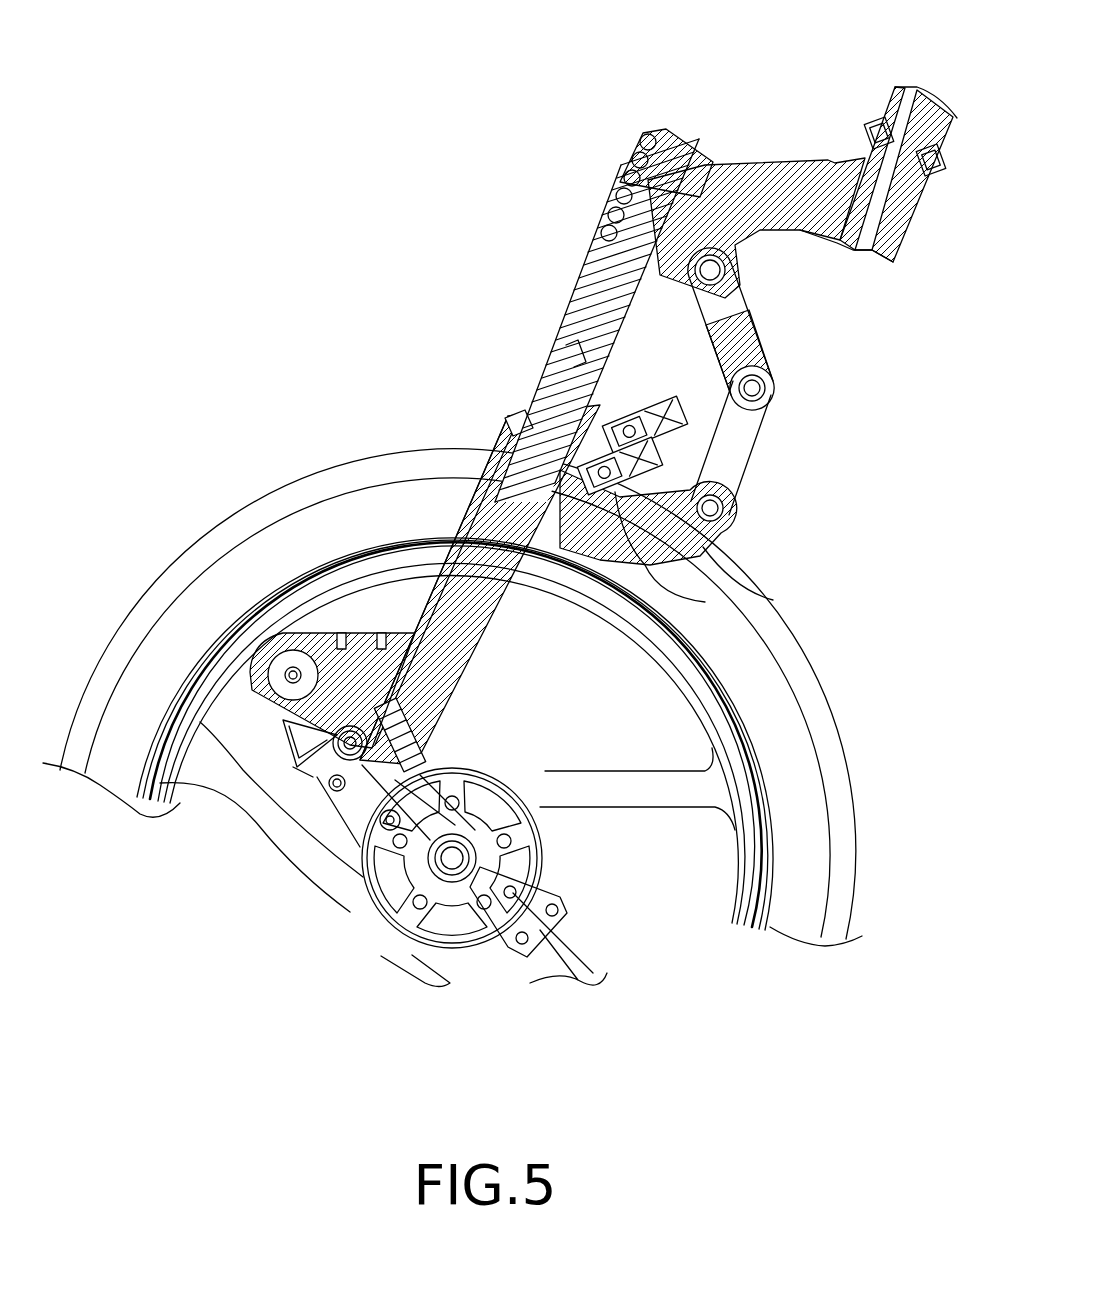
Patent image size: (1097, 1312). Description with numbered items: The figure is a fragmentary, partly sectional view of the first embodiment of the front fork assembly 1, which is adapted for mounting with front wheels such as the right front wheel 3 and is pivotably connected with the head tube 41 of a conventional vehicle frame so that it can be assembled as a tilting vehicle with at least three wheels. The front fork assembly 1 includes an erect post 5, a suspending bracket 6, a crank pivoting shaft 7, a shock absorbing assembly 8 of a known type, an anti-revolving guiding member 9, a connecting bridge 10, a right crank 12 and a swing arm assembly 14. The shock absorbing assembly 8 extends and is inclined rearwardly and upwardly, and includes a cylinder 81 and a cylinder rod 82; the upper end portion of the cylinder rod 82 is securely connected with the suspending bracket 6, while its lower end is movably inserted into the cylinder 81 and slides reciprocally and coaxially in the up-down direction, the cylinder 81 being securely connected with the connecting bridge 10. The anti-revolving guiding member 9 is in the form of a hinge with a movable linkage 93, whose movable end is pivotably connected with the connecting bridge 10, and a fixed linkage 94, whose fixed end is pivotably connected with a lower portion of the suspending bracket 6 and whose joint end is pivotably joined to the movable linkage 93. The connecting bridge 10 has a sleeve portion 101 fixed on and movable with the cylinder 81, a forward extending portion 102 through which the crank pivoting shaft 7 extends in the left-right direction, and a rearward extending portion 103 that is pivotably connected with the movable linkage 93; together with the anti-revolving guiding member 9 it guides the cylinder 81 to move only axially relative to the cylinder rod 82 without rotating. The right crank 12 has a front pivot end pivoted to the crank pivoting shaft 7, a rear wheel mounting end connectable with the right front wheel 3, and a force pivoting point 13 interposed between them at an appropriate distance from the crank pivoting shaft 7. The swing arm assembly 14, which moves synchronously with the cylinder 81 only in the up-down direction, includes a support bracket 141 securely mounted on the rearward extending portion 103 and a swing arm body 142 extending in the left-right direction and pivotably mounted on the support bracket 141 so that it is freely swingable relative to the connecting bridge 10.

The front fork assembly 1 is at (545, 233).
The right front wheel 3 is at (213, 547).
The erect post 5 is at (917, 87).
The suspending bracket 6 is at (782, 163).
The crank pivoting shaft 7 is at (251, 607).
The shock absorbing assembly 8 is at (599, 315).
The anti-revolving guiding member 9 is at (781, 381).
The connecting bridge 10 is at (428, 628).
The right crank 12 is at (293, 752).
The force pivoting point 13 is at (332, 758).
The swing arm assembly 14 is at (715, 357).
The head tube 41 is at (893, 90).
The cylinder 81 is at (522, 413).
The cylinder rod 82 is at (566, 345).
The movable linkage 93 is at (737, 457).
The fixed linkage 94 is at (742, 310).
The sleeve portion 101 is at (465, 470).
The forward extending portion 102 is at (350, 648).
The rearward extending portion 103 is at (690, 540).
The support bracket 141 is at (690, 598).
The swing arm body 142 is at (690, 423).